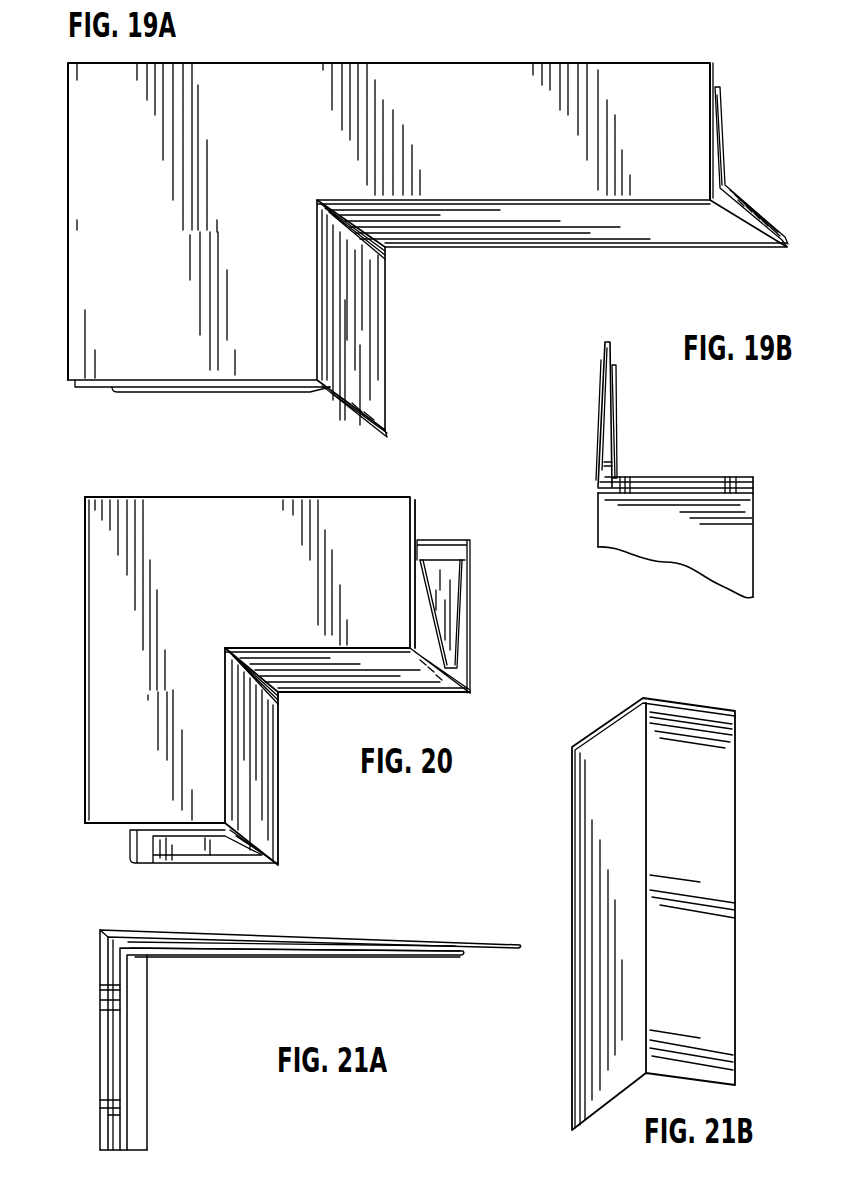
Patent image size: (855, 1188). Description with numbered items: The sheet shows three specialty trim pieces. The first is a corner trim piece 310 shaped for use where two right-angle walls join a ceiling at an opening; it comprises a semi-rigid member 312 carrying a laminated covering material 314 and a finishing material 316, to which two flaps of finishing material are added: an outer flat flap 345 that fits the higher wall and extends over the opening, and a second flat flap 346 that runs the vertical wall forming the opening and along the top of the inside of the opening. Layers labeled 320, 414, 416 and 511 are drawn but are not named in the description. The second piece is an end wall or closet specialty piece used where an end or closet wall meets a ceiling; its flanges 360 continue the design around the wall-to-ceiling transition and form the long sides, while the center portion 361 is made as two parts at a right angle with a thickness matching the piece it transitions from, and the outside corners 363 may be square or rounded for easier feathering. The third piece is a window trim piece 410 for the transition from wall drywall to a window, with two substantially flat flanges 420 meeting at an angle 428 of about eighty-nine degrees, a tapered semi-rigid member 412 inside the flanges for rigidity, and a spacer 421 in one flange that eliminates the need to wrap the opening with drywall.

In FIG. 19A, the trim piece 310 is at (264, 63).
In FIG. 19B, the trim piece 310 is at (602, 355).
In FIG. 19B, the semi-rigid member 312 is at (613, 464).
In FIG. 19B, the laminated covering material 314 is at (613, 420).
In FIG. 19B, the finishing material 316 is at (598, 428).
In FIG. 19A, the flange 320 is at (717, 92).
In FIG. 19B, the flange 320 is at (612, 372).
In FIG. 19A, the outer flat flap 345 is at (267, 366).
In FIG. 19A, the second flat flap 346 is at (373, 315).
In FIG. 20, the flanges 360 is at (232, 512).
In FIG. 20, the center portion 361 is at (313, 686).
In FIG. 20, the outside corners 363 is at (92, 510).
In FIG. 21A, the window trim piece 410 is at (145, 930).
In FIG. 21B, the window trim piece 410 is at (572, 850).
In FIG. 21A, the semi-rigid member 412 is at (192, 943).
In FIG. 21A, the gap between members 414 is at (197, 956).
In FIG. 21A, the vertical leg 416 is at (100, 1017).
In FIG. 21A, the flanges 420 is at (285, 938).
In FIG. 21A, the spacer 421 is at (142, 1083).
In FIG. 21A, the angle 428 is at (100, 928).
In FIG. 21A, the lower leg of inner member 511 is at (283, 957).